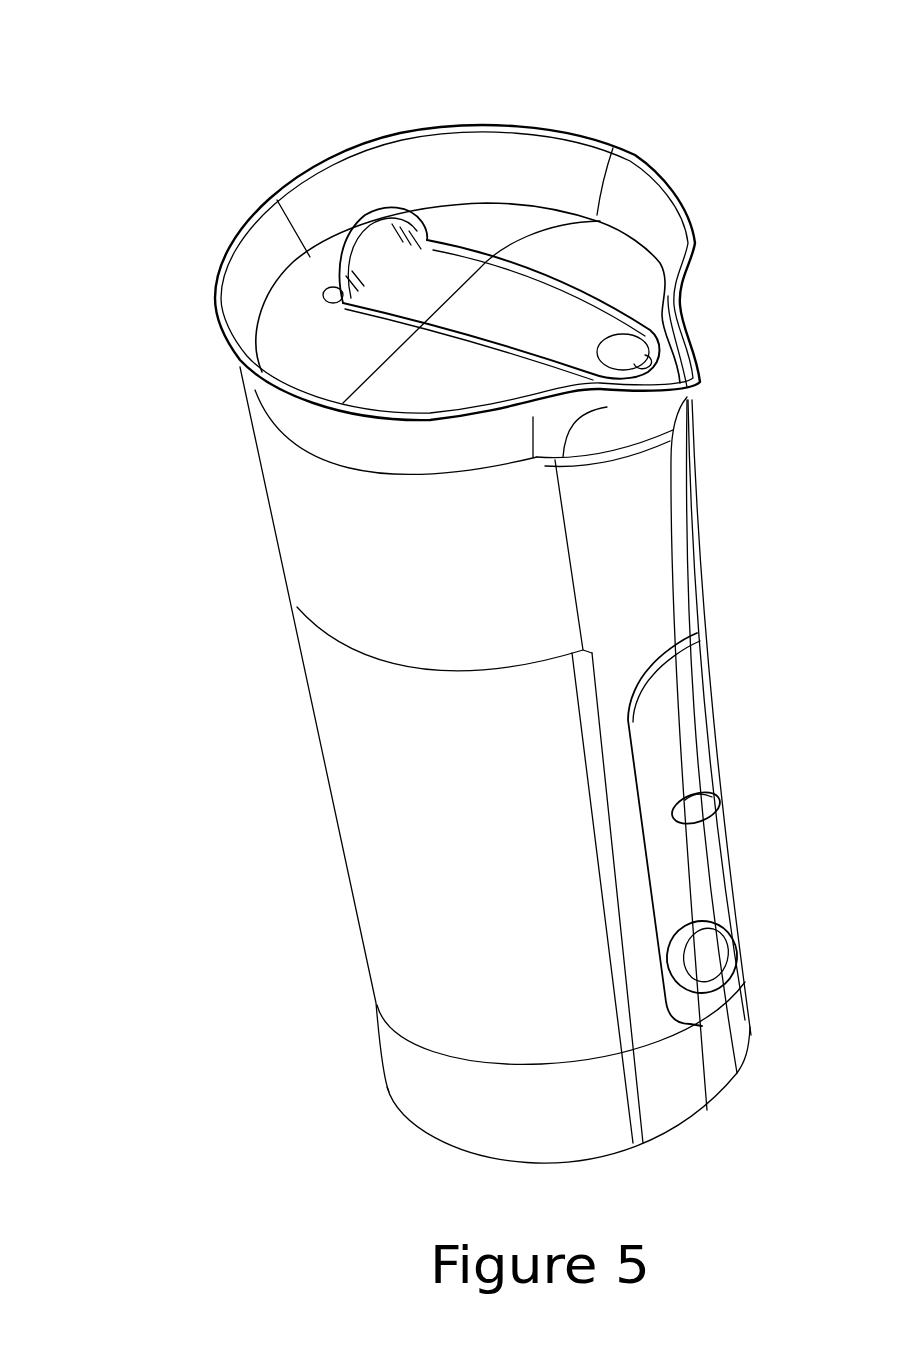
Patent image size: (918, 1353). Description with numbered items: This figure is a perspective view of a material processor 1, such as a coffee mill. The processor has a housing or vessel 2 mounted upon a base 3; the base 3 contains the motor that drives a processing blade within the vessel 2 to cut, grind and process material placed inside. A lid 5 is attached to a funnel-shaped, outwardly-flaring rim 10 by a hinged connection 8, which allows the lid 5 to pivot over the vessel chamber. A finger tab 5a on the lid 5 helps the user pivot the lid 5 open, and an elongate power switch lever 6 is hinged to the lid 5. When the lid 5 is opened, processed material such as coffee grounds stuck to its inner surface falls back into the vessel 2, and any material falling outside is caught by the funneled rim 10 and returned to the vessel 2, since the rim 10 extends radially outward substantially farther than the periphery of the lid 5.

The material processor 1 is at (160, 80).
The vessel 2 is at (312, 510).
The base 3 is at (428, 940).
The lid 5 is at (502, 227).
The finger tab 5a is at (344, 238).
The power switch lever 6 is at (412, 281).
The hinged connection 8 is at (384, 252).
The rim 10 is at (650, 196).